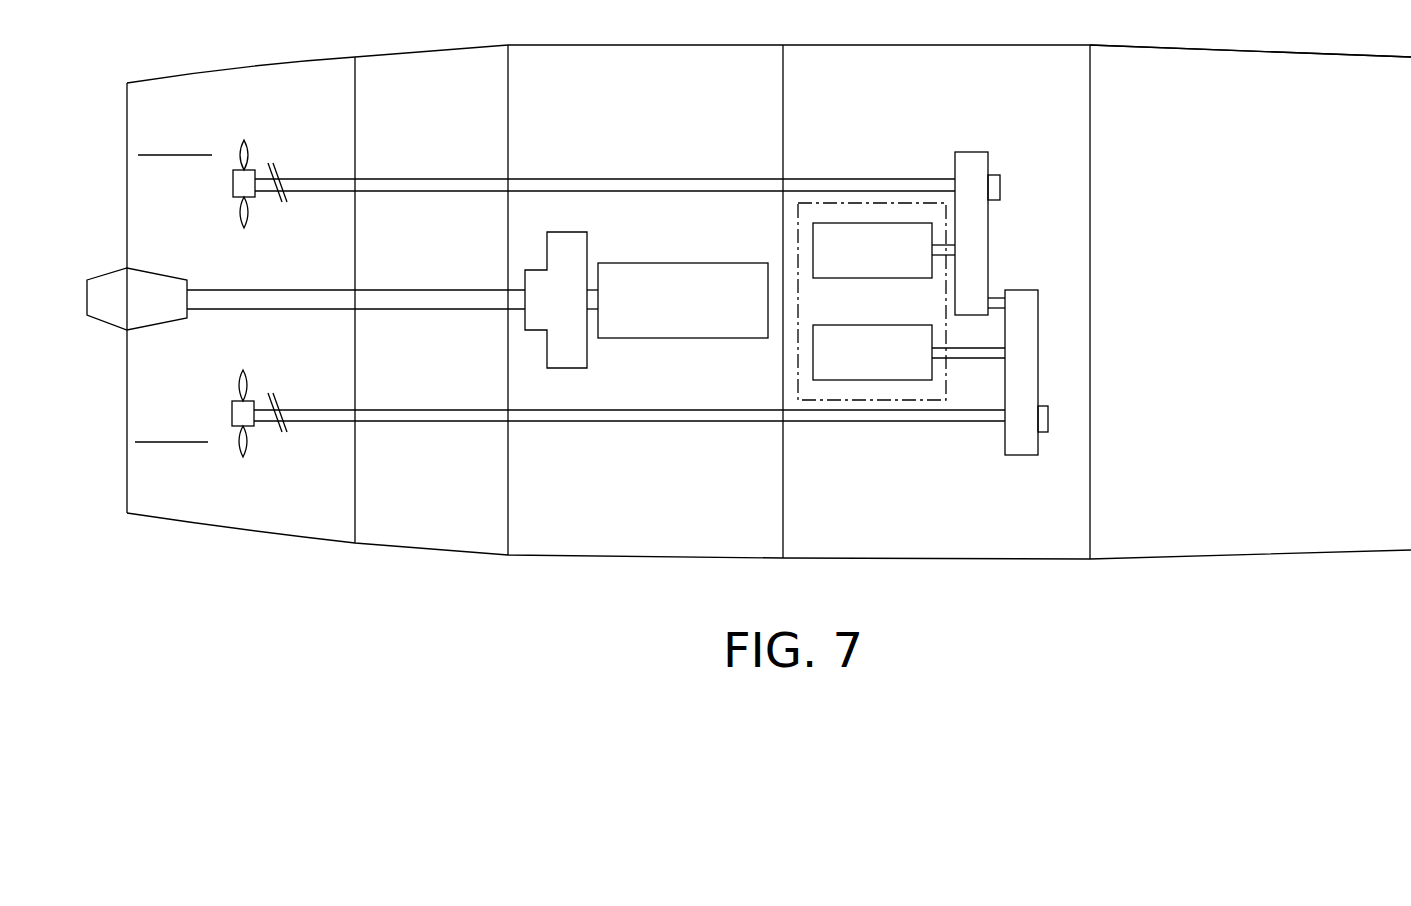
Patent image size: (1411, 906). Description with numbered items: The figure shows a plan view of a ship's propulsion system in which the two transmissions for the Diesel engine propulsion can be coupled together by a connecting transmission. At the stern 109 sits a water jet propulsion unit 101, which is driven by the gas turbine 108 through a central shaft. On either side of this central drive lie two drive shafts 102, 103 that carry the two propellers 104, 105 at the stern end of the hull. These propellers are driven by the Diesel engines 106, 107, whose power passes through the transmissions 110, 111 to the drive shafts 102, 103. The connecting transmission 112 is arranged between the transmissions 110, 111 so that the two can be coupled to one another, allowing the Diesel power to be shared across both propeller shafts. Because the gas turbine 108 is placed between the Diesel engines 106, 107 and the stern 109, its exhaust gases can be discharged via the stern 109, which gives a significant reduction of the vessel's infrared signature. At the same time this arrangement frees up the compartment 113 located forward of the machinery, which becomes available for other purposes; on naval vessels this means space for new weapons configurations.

The water jet propulsion unit 101 is at (106, 283).
The drive shaft 102 is at (398, 182).
The drive shaft 103 is at (396, 412).
The propeller 104 is at (246, 150).
The propeller 105 is at (245, 452).
The Diesel engine 106 is at (856, 222).
The Diesel engine 107 is at (862, 324).
The gas turbine 108 is at (672, 262).
The stern 109 is at (127, 489).
The transmission 110 is at (969, 152).
The transmission 111 is at (1021, 456).
The connecting transmission 112 is at (1022, 290).
The compartment 113 is at (1175, 56).